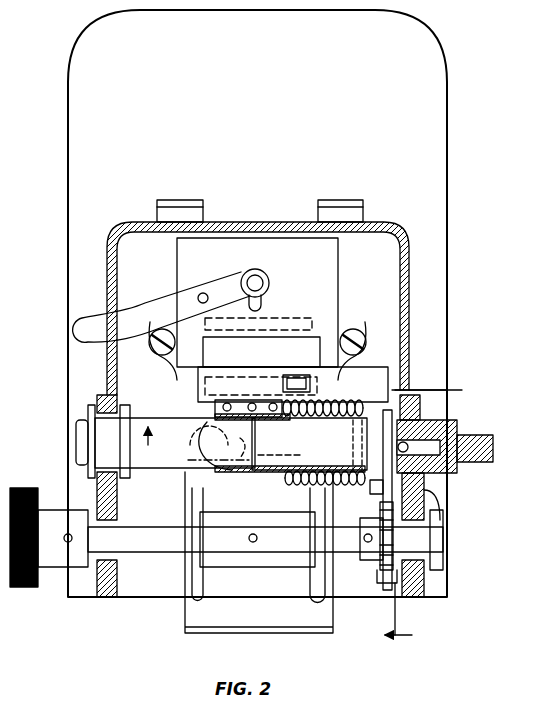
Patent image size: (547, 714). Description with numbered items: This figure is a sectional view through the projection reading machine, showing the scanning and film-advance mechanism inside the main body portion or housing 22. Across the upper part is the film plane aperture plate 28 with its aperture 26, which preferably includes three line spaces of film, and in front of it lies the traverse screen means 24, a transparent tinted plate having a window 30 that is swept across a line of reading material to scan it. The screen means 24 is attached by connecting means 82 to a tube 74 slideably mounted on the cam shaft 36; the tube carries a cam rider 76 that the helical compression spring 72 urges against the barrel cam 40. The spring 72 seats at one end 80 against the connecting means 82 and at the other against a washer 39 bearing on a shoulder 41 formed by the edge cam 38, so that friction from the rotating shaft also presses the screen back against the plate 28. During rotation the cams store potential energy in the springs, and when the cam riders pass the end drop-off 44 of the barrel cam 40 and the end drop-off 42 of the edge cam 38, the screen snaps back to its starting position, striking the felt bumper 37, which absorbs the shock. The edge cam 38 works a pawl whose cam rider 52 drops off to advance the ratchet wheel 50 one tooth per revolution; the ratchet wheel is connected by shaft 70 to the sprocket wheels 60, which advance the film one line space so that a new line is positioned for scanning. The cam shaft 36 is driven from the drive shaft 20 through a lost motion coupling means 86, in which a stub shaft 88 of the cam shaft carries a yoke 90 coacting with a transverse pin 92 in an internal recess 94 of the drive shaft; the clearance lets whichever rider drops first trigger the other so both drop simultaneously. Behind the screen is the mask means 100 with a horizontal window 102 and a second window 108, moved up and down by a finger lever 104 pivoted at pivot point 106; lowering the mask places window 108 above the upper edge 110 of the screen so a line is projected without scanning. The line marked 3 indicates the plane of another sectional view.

The section line 3- 3 is at (429, 521).
The drive shaft 20 is at (494, 440).
The housing 22 is at (452, 170).
The traverse screen means 24 is at (388, 375).
The aperture 26 is at (317, 340).
The film plane aperture plate 28 is at (314, 265).
The window 30 is at (311, 386).
The cam shaft 36 is at (162, 470).
The felt bumper 37 is at (128, 412).
The edge cam 38 is at (366, 432).
The washer 39 is at (390, 408).
The barrel cam 40 is at (219, 446).
The shoulder 41 is at (370, 470).
The end drop-off 42 is at (382, 512).
The end drop-off 44 is at (248, 452).
The ratchet wheel 50 is at (386, 583).
The cam rider 52 is at (376, 486).
The sprocket wheels 60 is at (198, 498).
The shaft 70 is at (365, 545).
The spring 72 is at (302, 485).
The tube 74 is at (258, 474).
The cam rider 76 is at (270, 455).
The spring end 80 is at (298, 416).
The connecting means 82 is at (214, 418).
The lost motion coupling means 86 is at (494, 448).
The stub shaft 88 is at (432, 490).
The yoke 90 is at (458, 470).
The transverse pin 92 is at (452, 440).
The internal recess 94 is at (425, 422).
The mask means 100 is at (303, 357).
The horizontal window 102 is at (205, 385).
The finger lever 104 is at (82, 330).
The pivot point 106 is at (203, 292).
The second window 108 is at (272, 320).
The upper edge 110 is at (221, 368).